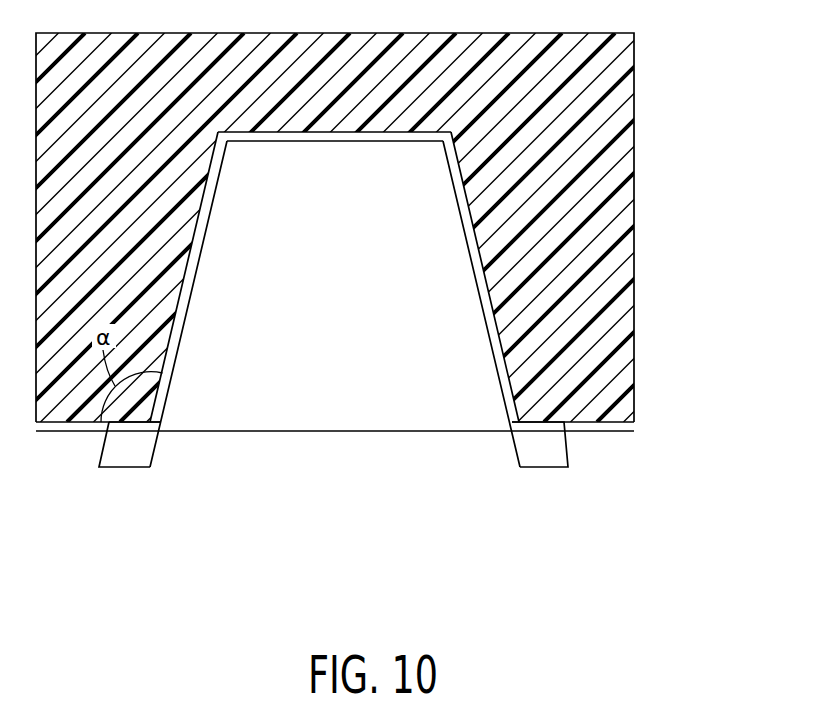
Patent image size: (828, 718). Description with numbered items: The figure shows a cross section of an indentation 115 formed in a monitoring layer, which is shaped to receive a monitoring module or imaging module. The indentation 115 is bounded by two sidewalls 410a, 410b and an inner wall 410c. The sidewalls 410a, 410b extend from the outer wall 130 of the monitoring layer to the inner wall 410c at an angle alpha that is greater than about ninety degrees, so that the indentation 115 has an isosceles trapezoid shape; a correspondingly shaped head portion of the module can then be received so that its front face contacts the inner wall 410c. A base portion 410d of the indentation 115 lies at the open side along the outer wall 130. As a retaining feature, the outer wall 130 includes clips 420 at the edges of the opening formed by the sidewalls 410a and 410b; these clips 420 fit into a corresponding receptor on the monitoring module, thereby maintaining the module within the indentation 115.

The outer wall 130 is at (636, 432).
The sidewall 410a is at (188, 282).
The sidewall 410b is at (479, 256).
The inner wall 410c is at (297, 141).
The base portion 410d is at (423, 411).
The clips 420 is at (130, 467).
The indentation 115 is at (286, 517).